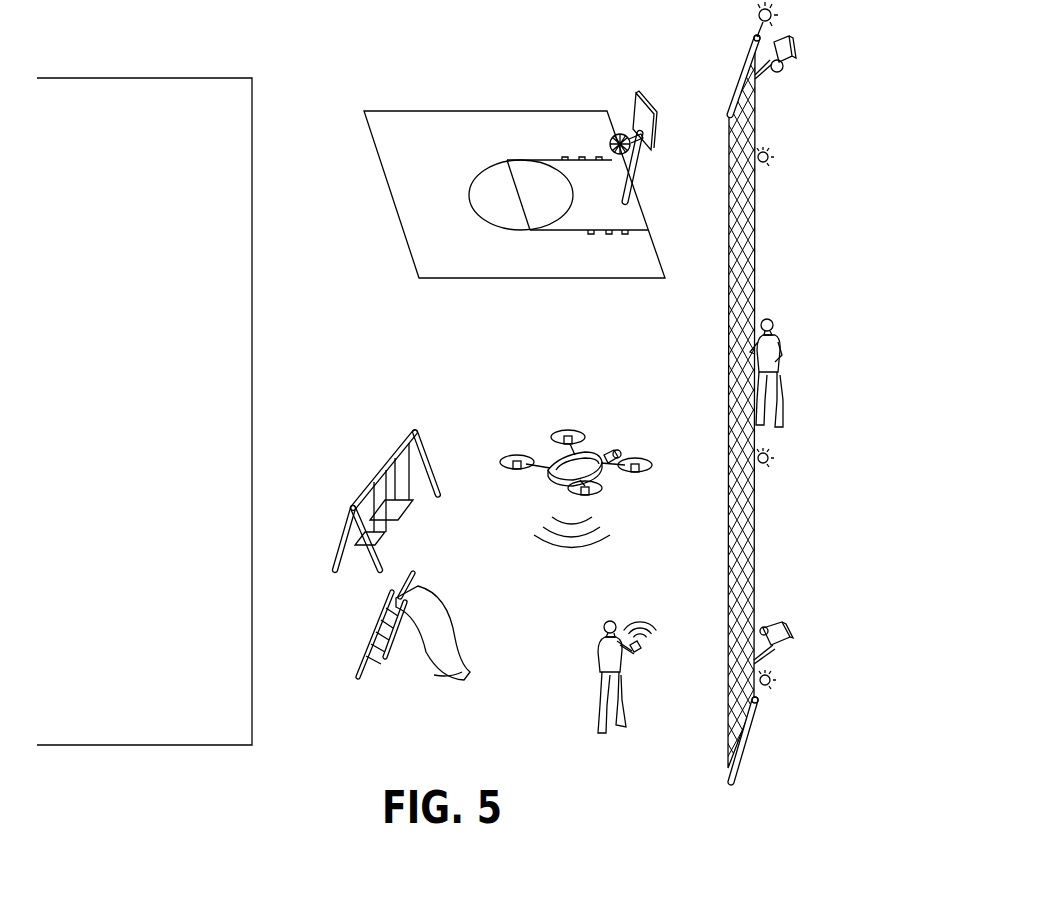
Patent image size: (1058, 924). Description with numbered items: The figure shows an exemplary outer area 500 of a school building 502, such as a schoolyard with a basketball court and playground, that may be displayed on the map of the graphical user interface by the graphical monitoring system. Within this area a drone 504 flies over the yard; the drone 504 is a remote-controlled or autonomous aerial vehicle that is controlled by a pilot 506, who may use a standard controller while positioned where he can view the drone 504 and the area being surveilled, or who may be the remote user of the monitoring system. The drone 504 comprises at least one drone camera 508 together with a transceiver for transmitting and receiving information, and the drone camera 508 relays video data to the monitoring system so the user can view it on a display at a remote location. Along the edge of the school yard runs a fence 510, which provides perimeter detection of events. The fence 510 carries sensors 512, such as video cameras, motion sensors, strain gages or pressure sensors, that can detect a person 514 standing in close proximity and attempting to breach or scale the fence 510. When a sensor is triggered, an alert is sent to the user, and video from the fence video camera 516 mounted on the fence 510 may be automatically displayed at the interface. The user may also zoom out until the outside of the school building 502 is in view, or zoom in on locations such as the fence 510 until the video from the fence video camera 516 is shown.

The outer area 500 is at (398, 68).
The school building 502 is at (243, 197).
The drone 504 is at (562, 466).
The pilot 506 is at (598, 616).
The drone camera 508 is at (607, 452).
The fence 510 is at (755, 240).
The sensors 512 is at (769, 459).
The person 514 is at (788, 316).
The fence video camera 516 is at (792, 50).